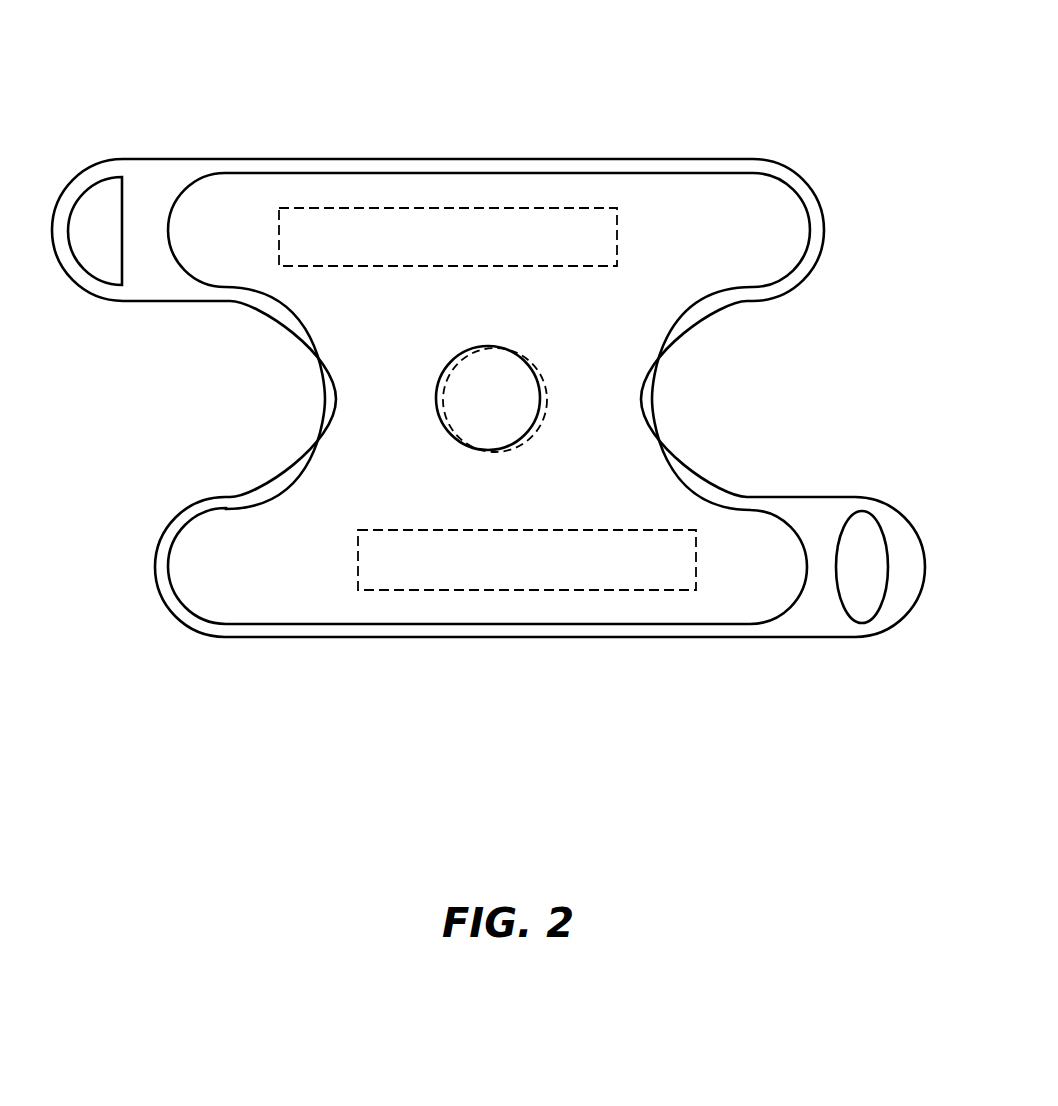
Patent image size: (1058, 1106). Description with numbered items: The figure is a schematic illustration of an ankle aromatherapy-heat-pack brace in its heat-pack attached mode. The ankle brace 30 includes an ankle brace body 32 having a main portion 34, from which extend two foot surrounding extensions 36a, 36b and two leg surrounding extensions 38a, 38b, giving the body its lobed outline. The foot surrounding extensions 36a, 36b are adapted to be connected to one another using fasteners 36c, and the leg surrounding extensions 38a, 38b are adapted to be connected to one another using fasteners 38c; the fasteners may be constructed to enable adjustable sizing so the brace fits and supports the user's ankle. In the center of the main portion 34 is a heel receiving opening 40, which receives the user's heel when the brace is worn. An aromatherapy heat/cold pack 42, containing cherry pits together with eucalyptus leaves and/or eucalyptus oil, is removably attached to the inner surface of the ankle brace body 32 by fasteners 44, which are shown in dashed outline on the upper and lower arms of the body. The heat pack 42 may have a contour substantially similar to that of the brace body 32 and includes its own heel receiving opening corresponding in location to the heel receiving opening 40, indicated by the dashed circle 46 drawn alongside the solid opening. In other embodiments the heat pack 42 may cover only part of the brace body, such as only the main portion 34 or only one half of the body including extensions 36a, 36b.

The ankle brace 30 is at (704, 103).
The ankle brace body 32 is at (515, 160).
The main portion 34 is at (327, 388).
The foot surrounding extension 36a is at (160, 178).
The foot surrounding extension 36b is at (780, 176).
The fasteners 36c is at (820, 231).
The leg surrounding extension 38a is at (242, 630).
The leg surrounding extension 38b is at (818, 620).
The fasteners 38c is at (862, 537).
The heel receiving opening 40 is at (546, 411).
The aromatherapy heat/cold pack 42 is at (702, 610).
The fasteners 44 is at (342, 212).
The central insert 46 is at (466, 447).